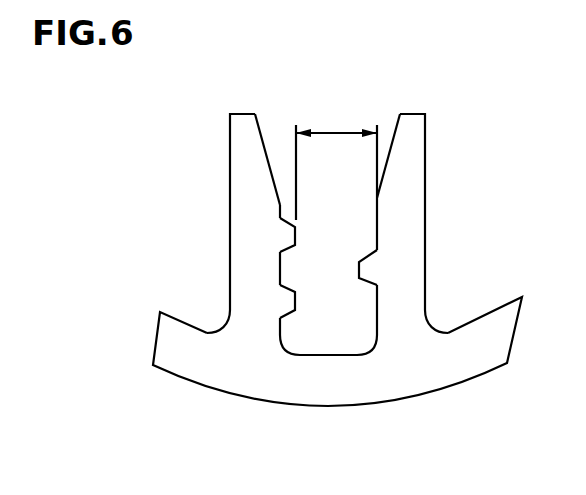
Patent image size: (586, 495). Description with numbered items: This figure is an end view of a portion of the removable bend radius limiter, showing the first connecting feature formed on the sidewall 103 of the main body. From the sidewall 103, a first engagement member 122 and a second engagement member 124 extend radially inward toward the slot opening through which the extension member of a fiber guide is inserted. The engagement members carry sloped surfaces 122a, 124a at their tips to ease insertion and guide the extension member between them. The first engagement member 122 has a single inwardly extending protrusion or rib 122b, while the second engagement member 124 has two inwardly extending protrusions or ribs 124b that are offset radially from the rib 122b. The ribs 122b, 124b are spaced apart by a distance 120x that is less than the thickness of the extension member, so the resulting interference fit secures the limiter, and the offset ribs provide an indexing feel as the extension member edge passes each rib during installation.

The sidewall 103 is at (220, 367).
The distance 120x is at (337, 133).
The first engagement member 122 is at (415, 171).
The sloped surface 122a is at (395, 143).
The inwardly extending protrusion or rib 122b is at (360, 262).
The second engagement member 124 is at (245, 214).
The sloped surface 124a is at (263, 142).
The inwardly extending protrusions or ribs 124b is at (285, 237).